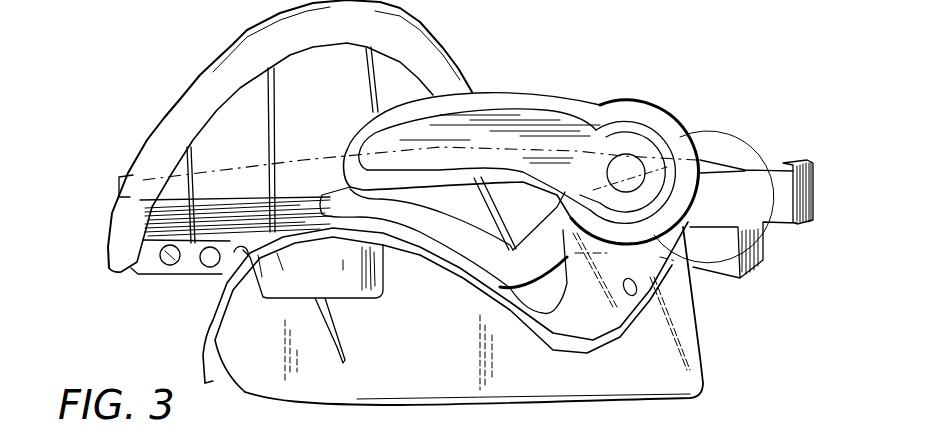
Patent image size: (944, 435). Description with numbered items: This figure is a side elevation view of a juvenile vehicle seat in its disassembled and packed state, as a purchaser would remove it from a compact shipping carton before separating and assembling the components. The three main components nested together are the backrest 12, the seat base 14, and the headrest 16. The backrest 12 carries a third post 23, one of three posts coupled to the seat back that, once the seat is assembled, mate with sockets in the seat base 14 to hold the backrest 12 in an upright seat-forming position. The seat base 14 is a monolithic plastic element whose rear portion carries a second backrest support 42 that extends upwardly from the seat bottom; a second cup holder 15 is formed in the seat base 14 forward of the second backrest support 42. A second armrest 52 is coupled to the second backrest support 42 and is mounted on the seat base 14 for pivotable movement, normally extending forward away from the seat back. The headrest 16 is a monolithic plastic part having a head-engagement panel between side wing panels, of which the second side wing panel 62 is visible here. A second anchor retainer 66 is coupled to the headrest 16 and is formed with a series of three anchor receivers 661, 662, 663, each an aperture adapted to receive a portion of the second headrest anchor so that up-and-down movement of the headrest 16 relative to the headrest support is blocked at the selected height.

The backrest 12 is at (722, 152).
The seat base 14 is at (197, 333).
The second cup holder 15 is at (341, 283).
The headrest 16 is at (183, 97).
The third post 23 is at (804, 158).
The second backrest support 42 is at (665, 274).
The second armrest 52 is at (522, 85).
The second side wing panel 62 is at (338, 110).
The second anchor retainer 66 is at (150, 262).
The anchor receiver 661 is at (236, 290).
The anchor receiver 662 is at (210, 257).
The anchor receiver 663 is at (168, 266).